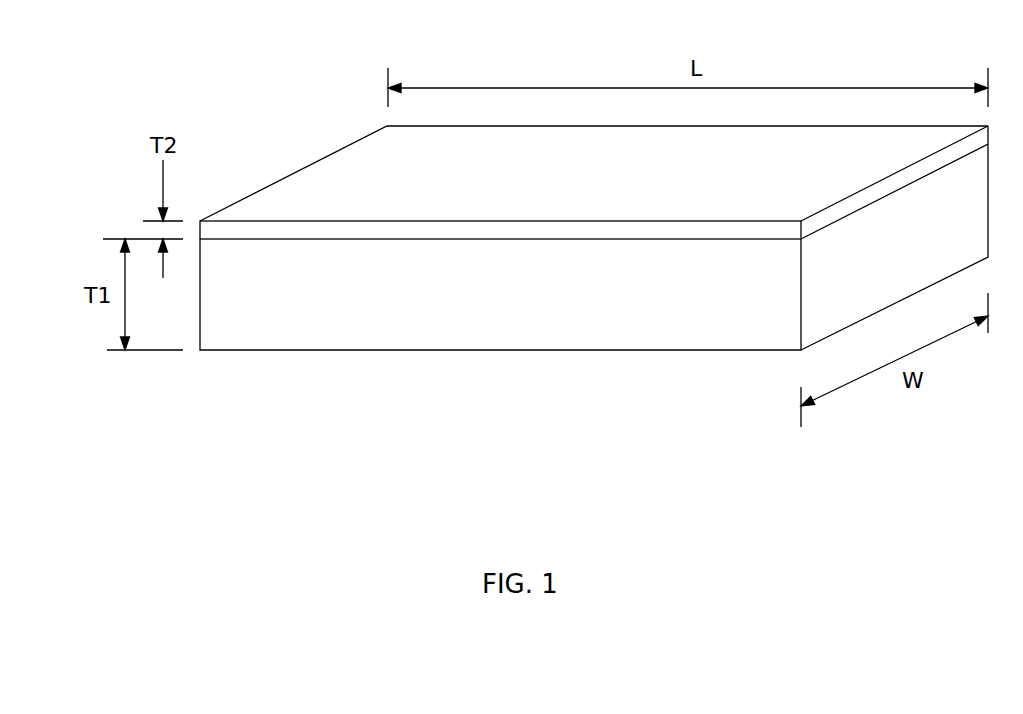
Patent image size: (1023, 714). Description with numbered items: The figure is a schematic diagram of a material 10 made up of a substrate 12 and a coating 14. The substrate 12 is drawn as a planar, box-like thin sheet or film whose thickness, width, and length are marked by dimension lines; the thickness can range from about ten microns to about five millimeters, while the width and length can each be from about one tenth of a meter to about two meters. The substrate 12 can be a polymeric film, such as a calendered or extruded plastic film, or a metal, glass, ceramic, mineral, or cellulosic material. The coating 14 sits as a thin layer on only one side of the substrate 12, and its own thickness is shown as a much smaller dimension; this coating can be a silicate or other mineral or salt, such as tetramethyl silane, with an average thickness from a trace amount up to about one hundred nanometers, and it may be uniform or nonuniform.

The material 10 is at (571, 230).
The substrate 12 is at (463, 313).
The coating 14 is at (630, 232).